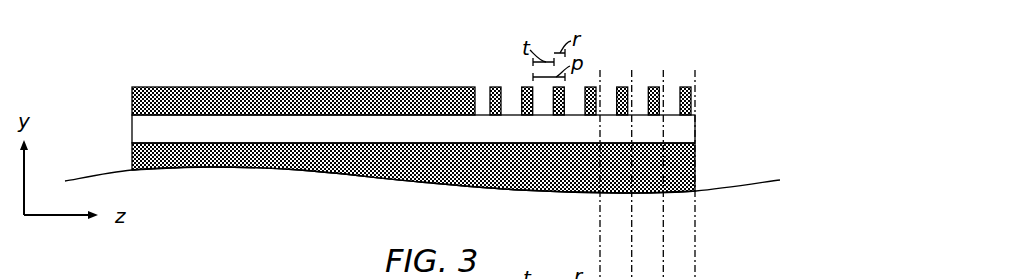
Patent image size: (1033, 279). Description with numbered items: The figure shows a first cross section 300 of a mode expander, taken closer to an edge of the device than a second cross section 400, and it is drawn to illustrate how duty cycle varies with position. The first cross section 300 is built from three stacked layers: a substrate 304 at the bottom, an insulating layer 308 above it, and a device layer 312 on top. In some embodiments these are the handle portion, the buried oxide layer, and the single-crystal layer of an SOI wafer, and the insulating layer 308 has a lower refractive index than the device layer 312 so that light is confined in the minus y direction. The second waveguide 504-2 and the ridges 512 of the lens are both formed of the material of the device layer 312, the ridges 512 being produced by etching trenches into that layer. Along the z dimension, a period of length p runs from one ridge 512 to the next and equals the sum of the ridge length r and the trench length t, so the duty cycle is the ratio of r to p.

The first cross section 300 is at (138, 56).
The substrate 304 is at (132, 156).
The insulating layer 308 is at (132, 129).
The device layer 312 is at (268, 82).
The second waveguide 504-2 is at (252, 87).
The ridges 512 is at (524, 87).
The second cross section 400 is at (143, 278).